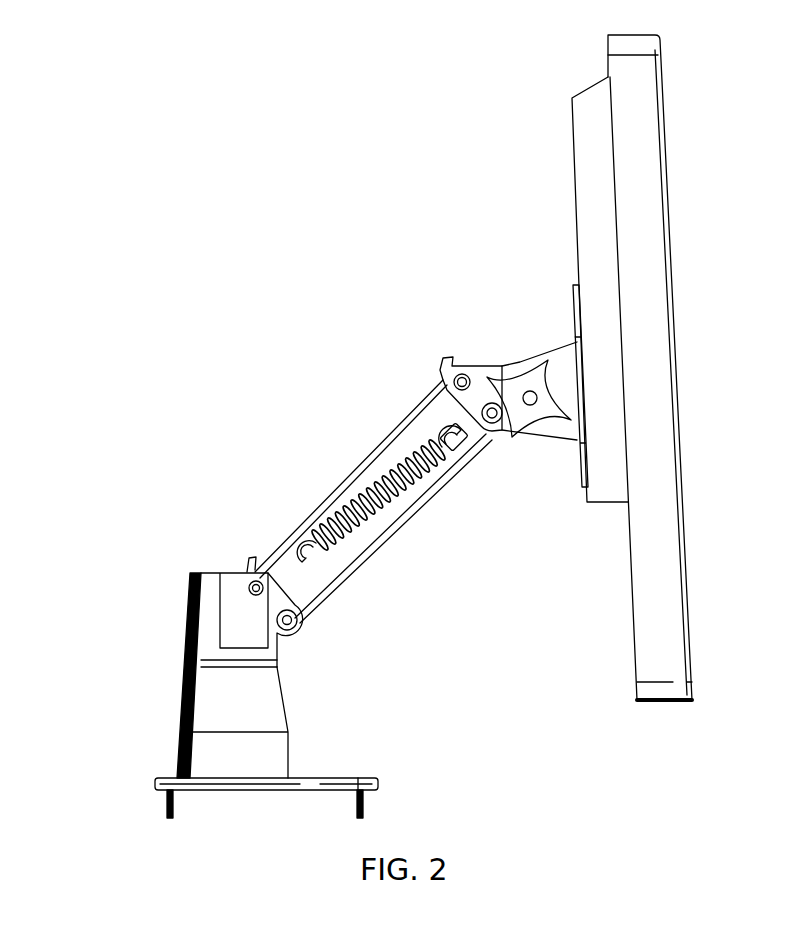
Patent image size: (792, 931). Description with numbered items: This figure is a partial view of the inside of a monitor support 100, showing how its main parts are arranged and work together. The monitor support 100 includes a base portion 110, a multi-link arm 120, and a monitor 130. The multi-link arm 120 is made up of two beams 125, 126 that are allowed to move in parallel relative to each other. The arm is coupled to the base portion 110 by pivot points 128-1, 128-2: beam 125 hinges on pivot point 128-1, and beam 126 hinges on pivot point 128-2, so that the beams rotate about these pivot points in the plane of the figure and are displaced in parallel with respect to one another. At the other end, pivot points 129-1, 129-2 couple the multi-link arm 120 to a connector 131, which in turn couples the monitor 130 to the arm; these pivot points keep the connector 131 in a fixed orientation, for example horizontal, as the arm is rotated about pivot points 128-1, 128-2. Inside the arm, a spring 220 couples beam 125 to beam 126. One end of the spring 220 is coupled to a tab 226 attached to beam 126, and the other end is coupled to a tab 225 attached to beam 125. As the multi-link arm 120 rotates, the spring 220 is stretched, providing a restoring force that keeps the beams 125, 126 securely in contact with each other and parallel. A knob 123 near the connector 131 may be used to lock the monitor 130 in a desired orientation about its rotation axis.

The monitor support 100 is at (210, 212).
The base portion 110 is at (183, 697).
The multi-link arm 120 is at (330, 492).
The knob 123 is at (545, 402).
The beam 125 is at (440, 410).
The beam 126 is at (332, 577).
The pivot point 128-1 is at (250, 588).
The pivot point 128-2 is at (278, 632).
The pivot point 129-1 is at (460, 374).
The pivot point 129-2 is at (500, 422).
The monitor 130 is at (668, 218).
The connector 131 is at (478, 366).
The spring 220 is at (378, 497).
The tab 225 is at (300, 545).
The tab 226 is at (478, 432).